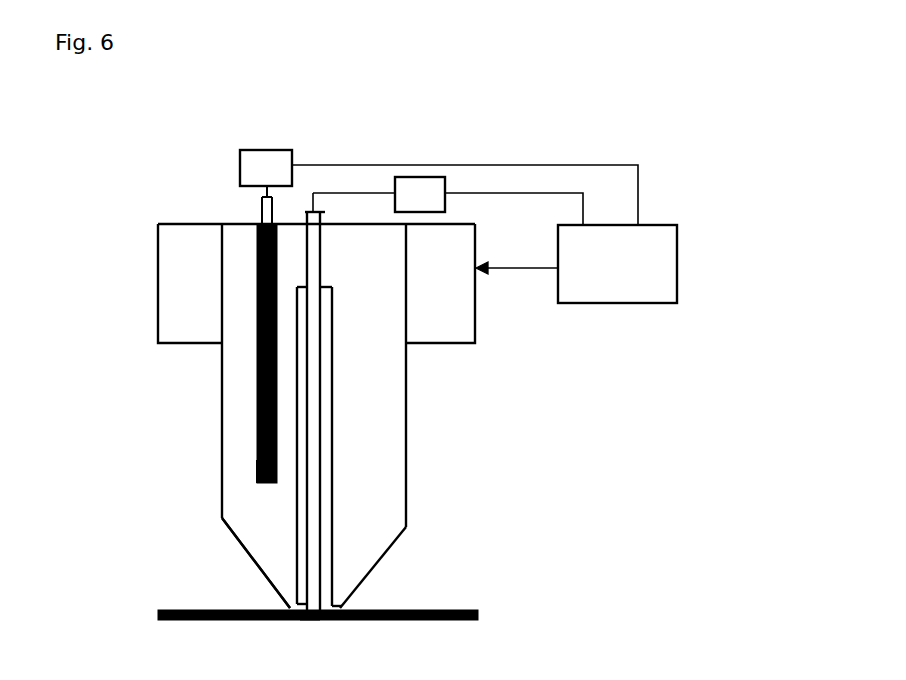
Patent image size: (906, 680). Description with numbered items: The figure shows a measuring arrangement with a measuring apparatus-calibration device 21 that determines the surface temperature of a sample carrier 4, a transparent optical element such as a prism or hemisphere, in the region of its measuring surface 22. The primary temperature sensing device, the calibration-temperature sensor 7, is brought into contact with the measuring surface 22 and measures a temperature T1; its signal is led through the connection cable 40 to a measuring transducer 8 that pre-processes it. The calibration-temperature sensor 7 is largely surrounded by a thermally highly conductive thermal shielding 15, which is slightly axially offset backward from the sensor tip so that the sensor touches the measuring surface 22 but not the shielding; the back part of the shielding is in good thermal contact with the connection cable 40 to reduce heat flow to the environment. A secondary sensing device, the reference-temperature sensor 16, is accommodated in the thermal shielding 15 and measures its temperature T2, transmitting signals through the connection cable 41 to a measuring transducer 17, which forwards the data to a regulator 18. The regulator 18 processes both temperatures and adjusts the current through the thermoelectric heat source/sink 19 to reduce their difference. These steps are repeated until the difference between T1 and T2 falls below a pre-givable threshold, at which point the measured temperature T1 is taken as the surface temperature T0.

The sample carrier 4 is at (201, 637).
The calibration-temperature sensor 7 is at (315, 537).
The measuring transducer 8 is at (283, 152).
The thermal shielding 15 is at (371, 543).
The reference-temperature sensor 16 is at (255, 446).
The measuring transducer 17 is at (433, 178).
The regulator 18 is at (608, 290).
The heat source/sink 19 is at (430, 330).
The measuring apparatus-calibration device 21 is at (127, 238).
The measuring surface 22 is at (340, 608).
The connection cable 40 is at (262, 200).
The connection cable 41 is at (322, 214).
The measured surface temperature T0 is at (309, 628).
The temperature measured by the calibration-temperature sensor T1 is at (321, 512).
The temperature of the reference-temperature sensor T2 is at (258, 471).